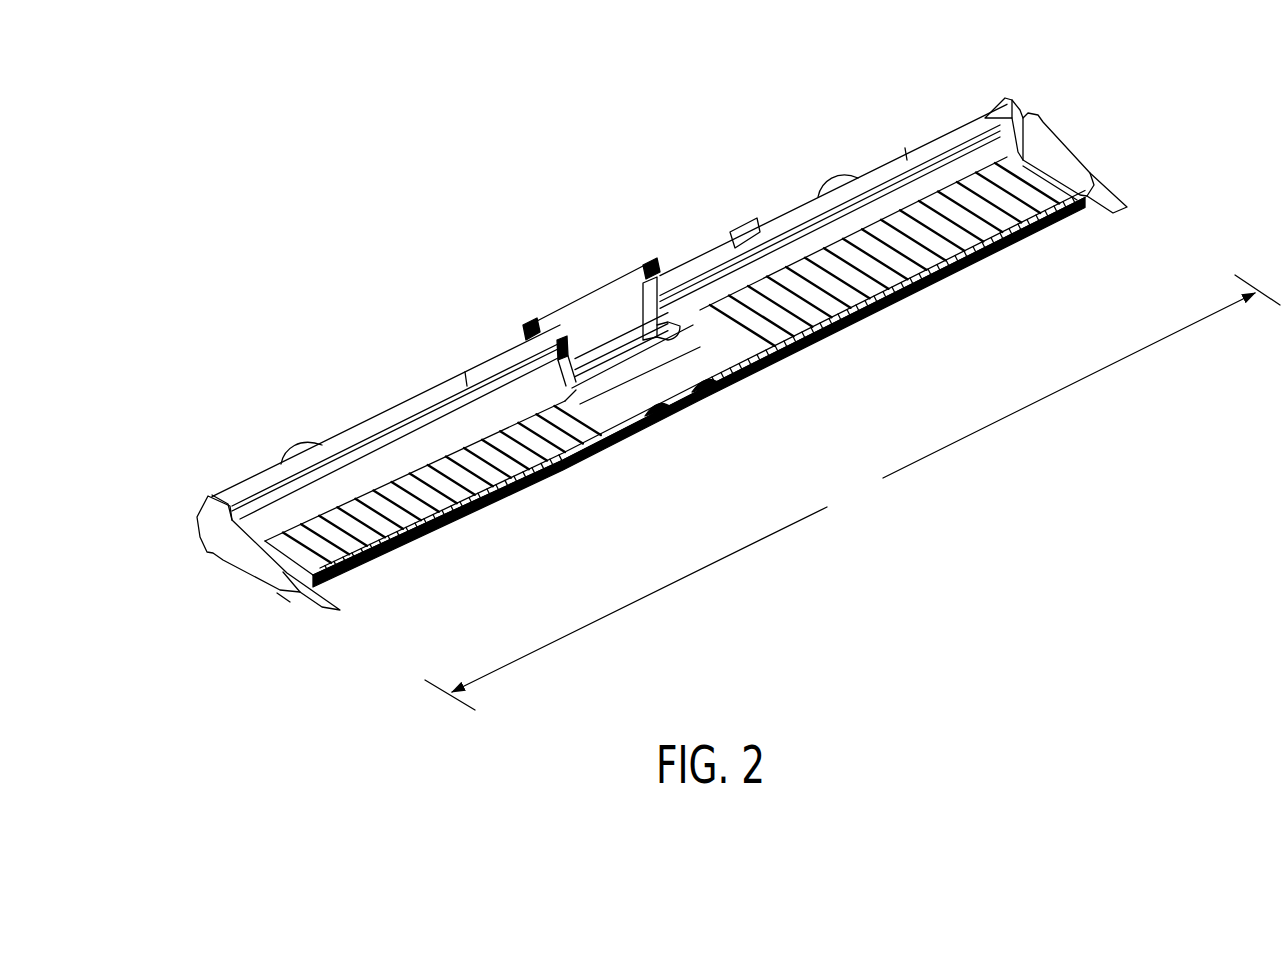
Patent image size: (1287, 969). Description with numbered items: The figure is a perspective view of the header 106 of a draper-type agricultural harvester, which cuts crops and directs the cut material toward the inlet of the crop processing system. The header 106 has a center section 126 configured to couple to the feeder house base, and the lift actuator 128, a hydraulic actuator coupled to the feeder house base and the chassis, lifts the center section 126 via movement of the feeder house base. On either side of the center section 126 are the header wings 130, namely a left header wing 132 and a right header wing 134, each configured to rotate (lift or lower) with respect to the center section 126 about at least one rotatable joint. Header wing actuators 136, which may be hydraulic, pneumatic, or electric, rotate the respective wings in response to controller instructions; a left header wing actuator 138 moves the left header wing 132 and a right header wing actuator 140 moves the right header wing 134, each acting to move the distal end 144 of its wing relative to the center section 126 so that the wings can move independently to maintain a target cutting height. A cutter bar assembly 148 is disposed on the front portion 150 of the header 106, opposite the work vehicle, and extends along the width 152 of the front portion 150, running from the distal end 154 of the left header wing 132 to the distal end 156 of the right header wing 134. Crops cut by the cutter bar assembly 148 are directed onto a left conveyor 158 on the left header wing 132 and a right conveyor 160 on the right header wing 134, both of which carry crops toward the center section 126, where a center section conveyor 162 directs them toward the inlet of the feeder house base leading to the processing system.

The header 106 is at (492, 155).
The center section 126 is at (558, 295).
The lift actuator 128 is at (674, 278).
The header wings 130 is at (609, 280).
The left header wing 132 is at (908, 141).
The right header wing 134 is at (358, 405).
The header wing actuators 136 is at (646, 250).
The left header wing actuator 138 is at (720, 211).
The right header wing actuator 140 is at (456, 355).
The distal end 144 is at (615, 318).
The distal end of the left header wing 154 is at (1075, 129).
The distal end of the right header wing 156 is at (170, 507).
The cutter bar assembly 148 is at (827, 340).
The front portion 150 is at (706, 406).
The width 152 is at (852, 492).
The left conveyor 158 is at (940, 285).
The right conveyor 160 is at (492, 503).
The center section conveyor 162 is at (640, 358).